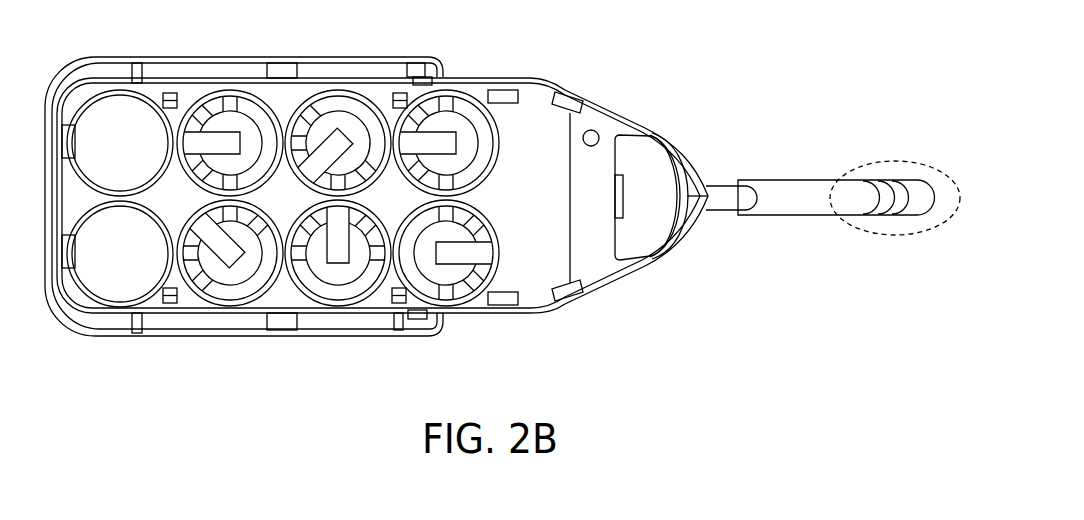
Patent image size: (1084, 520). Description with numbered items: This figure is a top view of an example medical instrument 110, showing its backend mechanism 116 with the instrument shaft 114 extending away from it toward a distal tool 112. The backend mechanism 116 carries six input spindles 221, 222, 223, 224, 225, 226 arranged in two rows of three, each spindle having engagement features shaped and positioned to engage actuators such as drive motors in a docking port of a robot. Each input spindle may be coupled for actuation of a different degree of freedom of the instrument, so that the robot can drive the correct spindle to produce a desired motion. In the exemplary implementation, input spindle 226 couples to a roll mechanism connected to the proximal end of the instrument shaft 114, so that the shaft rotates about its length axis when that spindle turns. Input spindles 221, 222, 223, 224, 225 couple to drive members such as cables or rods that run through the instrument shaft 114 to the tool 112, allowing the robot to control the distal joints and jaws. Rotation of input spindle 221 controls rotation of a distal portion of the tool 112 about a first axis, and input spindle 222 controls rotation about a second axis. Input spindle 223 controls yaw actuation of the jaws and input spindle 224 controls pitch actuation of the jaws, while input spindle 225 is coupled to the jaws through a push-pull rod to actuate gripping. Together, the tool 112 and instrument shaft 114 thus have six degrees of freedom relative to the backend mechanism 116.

The medical instrument 110 is at (727, 73).
The tool 112 is at (897, 162).
The instrument shaft 114 is at (780, 180).
The backend mechanism 116 is at (350, 58).
The input spindle 221 is at (236, 272).
The input spindle 222 is at (227, 127).
The input spindle 223 is at (338, 268).
The input spindle 224 is at (328, 126).
The input spindle 225 is at (448, 250).
The input spindle 226 is at (448, 125).